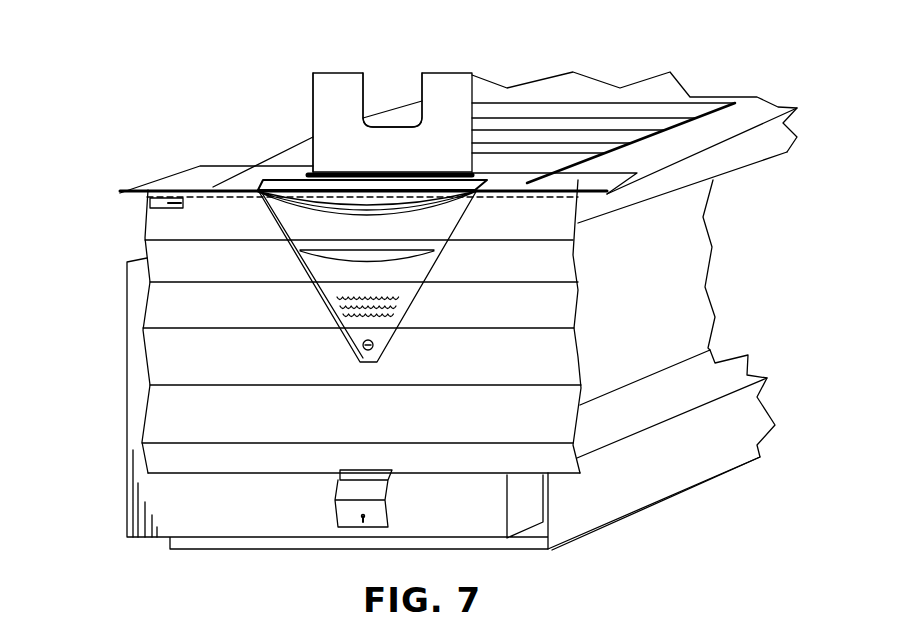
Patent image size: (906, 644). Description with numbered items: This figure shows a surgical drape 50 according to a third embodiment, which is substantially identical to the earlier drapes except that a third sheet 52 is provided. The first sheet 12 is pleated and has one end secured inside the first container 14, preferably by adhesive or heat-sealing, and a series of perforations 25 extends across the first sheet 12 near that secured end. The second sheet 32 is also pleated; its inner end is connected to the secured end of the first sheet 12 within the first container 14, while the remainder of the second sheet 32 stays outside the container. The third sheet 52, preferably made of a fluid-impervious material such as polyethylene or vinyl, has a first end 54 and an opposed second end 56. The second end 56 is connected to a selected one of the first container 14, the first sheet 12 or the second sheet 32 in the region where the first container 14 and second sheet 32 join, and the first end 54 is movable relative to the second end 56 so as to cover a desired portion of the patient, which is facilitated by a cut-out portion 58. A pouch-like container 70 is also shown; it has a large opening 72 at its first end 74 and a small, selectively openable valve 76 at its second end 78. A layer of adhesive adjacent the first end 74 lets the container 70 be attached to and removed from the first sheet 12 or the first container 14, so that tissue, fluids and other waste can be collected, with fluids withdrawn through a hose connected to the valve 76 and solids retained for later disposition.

The first sheet 12 is at (107, 408).
The first container 14 is at (600, 183).
The perforations 25 is at (548, 198).
The second sheet 32 is at (663, 93).
The surgical drape 50 is at (247, 85).
The third sheet 52 is at (475, 61).
The first end of third sheet 54 is at (463, 90).
The second end of third sheet 56 is at (330, 155).
The cut-out portion 58 is at (363, 90).
The pouch-like container 70 is at (282, 270).
The large opening 72 is at (427, 195).
The first end of pouch-like container 74 is at (260, 215).
The valve 76 is at (375, 344).
The second end of pouch-like container 78 is at (327, 348).